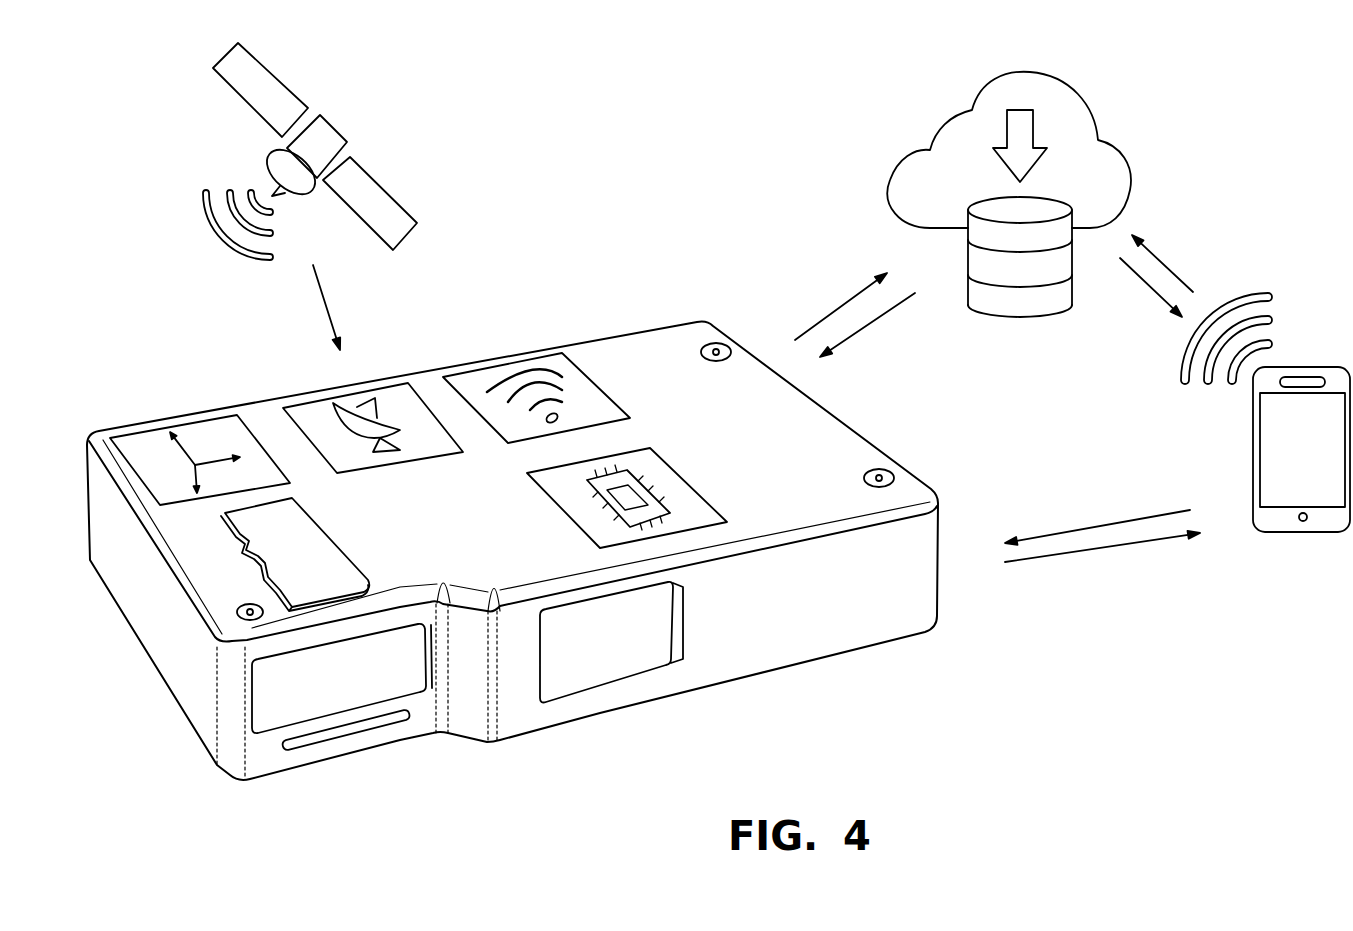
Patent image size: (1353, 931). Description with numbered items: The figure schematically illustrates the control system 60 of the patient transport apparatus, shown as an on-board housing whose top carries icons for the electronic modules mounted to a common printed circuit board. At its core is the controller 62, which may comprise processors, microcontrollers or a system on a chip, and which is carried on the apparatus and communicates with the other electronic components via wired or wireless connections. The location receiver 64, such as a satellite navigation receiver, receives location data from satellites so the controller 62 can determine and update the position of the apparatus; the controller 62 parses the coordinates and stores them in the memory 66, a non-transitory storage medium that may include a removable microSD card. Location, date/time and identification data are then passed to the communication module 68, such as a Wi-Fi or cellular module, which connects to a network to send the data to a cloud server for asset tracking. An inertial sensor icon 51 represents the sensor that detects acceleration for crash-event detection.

The control system 60 is at (726, 289).
The sensor module (accelerometer) 51 is at (132, 431).
The location receiver 64 is at (428, 397).
The communication module 68 is at (593, 368).
The controller 62 is at (678, 473).
The memory 66 is at (323, 563).